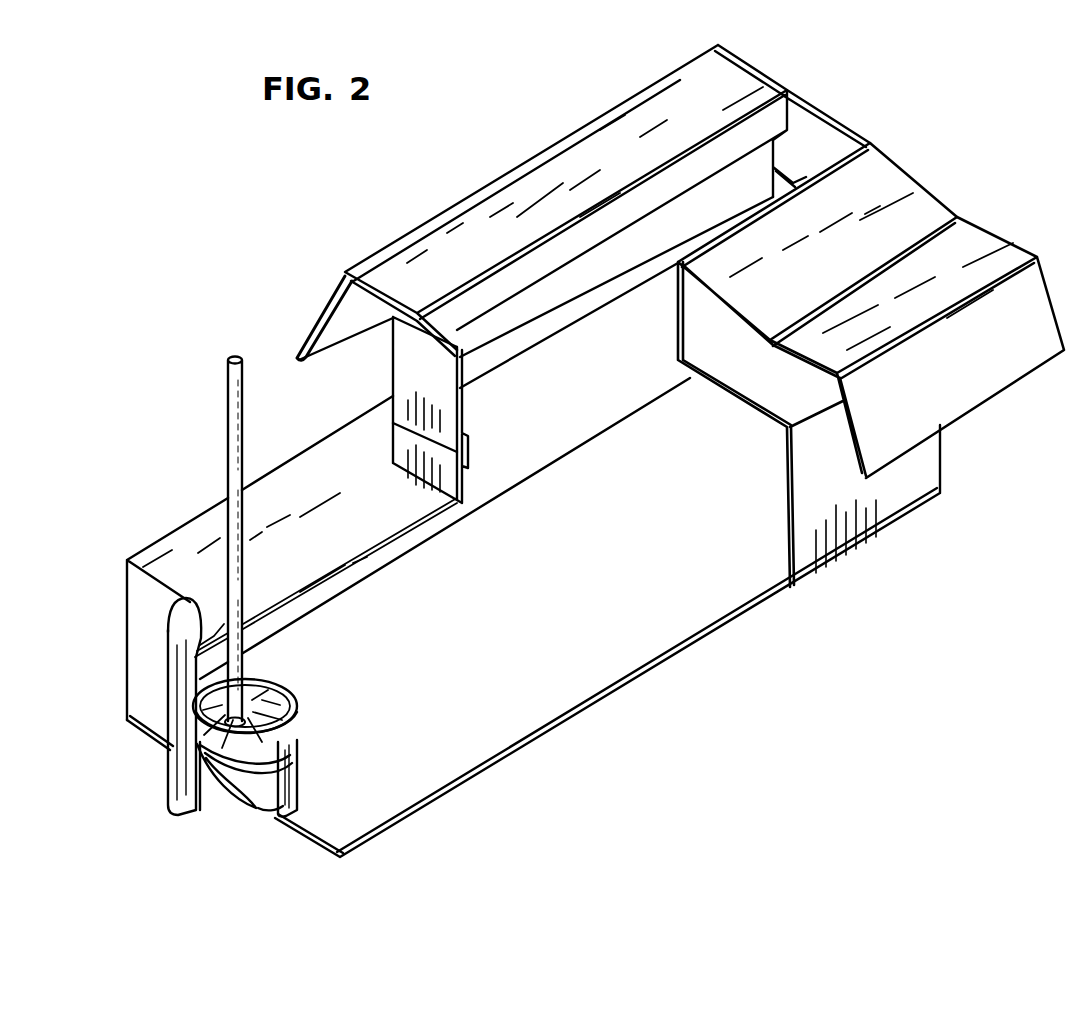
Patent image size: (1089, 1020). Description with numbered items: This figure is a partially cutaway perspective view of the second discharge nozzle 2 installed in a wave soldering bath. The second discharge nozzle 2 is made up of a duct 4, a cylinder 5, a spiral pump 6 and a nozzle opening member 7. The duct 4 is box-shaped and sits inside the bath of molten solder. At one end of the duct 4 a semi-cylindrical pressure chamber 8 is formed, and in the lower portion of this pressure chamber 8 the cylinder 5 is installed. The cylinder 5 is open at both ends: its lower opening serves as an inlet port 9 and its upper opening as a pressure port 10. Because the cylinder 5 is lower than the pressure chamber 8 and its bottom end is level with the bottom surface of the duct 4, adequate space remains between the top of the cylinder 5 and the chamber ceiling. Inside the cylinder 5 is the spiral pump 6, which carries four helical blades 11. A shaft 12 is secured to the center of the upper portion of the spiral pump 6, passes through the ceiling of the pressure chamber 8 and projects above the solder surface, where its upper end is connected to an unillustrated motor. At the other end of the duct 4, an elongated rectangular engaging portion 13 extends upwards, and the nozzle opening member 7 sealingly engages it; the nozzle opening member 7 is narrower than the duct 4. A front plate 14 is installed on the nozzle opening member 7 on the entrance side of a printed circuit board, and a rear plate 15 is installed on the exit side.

The second discharge nozzle 2 is at (752, 610).
The duct 4 is at (310, 465).
The cylinder 5 is at (296, 752).
The spiral pump 6 is at (222, 805).
The nozzle opening member 7 is at (393, 360).
The pressure chamber 8 is at (210, 658).
The inlet port 9 is at (262, 805).
The pressure port 10 is at (268, 690).
The helical blades 11 is at (287, 703).
The shaft 12 is at (230, 388).
The engaging portion 13 is at (393, 435).
The front plate 14 is at (752, 78).
The rear plate 15 is at (908, 178).